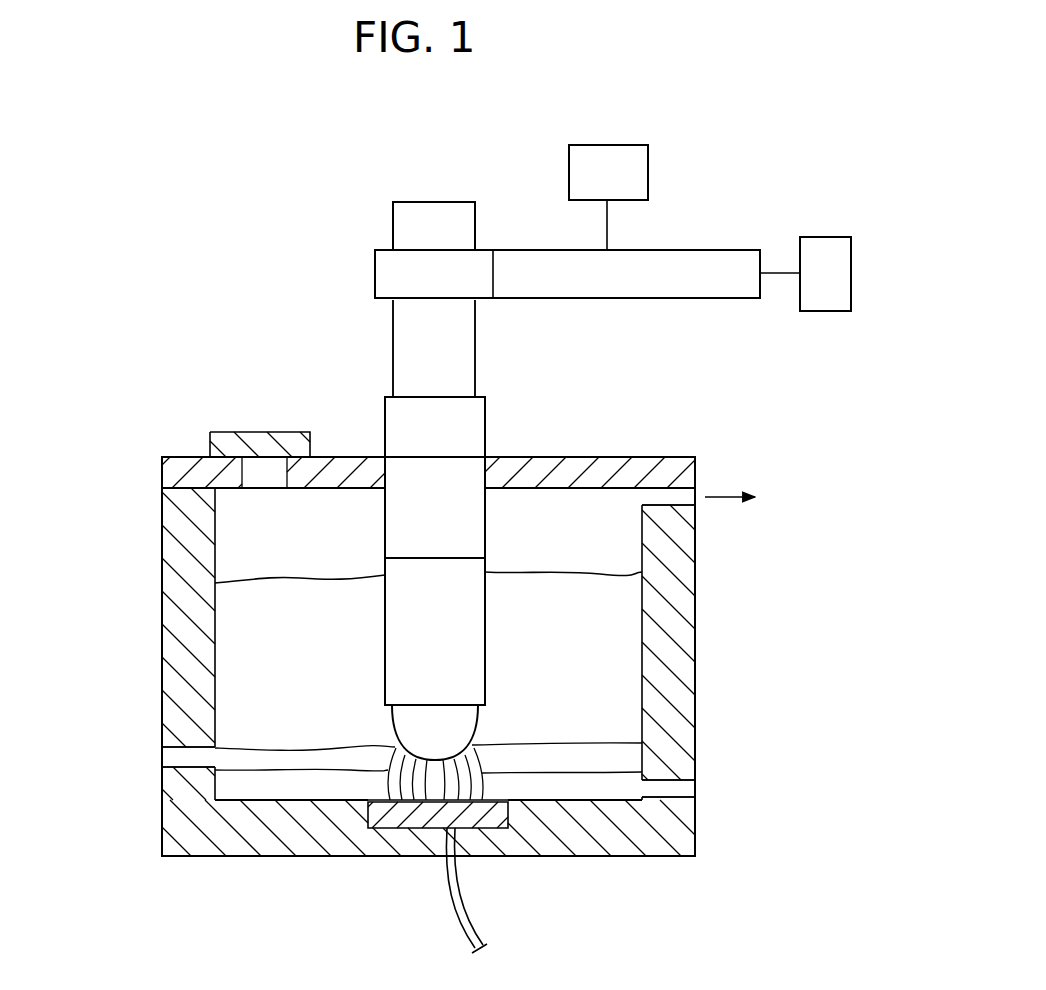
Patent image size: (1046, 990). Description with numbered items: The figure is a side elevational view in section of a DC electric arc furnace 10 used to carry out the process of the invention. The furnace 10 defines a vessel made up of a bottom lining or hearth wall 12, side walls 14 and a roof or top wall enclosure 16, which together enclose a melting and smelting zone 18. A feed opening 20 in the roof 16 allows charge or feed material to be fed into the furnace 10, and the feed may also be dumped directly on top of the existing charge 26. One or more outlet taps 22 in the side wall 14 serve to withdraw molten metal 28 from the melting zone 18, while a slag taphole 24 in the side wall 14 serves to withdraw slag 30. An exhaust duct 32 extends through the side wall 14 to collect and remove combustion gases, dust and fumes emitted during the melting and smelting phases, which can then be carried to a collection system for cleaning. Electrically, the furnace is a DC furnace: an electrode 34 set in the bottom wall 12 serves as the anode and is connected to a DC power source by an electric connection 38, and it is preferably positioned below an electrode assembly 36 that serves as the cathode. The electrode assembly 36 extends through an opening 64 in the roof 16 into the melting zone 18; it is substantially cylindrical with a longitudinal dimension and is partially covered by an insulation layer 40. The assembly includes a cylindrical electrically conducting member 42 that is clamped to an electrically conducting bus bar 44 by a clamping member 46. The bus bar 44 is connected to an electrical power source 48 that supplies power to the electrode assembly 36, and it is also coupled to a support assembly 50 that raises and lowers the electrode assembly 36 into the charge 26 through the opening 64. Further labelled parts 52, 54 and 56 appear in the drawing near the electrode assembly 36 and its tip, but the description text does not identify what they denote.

The electric arc furnace 10 is at (733, 435).
The bottom lining or hearth wall 12 is at (665, 858).
The side walls 14 is at (162, 657).
The roof or top wall enclosure 16 is at (643, 457).
The melting and smelting zone 18 is at (358, 760).
The feed opening 20 is at (267, 480).
The outlet tap 22 is at (697, 785).
The slag taphole 24 is at (170, 757).
The charge 26 is at (320, 576).
The molten metal 28 is at (600, 783).
The slag 30 is at (245, 760).
The exhaust duct 32 is at (695, 493).
The electrode 34 is at (393, 830).
The electrode assembly 36 is at (375, 406).
The electric connection 38 is at (462, 928).
The insulation layer 40 is at (488, 410).
The cylindrical electrically conducting member 42 is at (447, 345).
The bus bar 44 is at (695, 285).
The clamping member 46 is at (482, 260).
The electrical power source 48 is at (843, 268).
The support assembly 50 is at (637, 163).
The actuator block 52 is at (387, 210).
The rod 54 is at (393, 380).
The probe tip 56 is at (492, 518).
The opening 64 is at (490, 450).